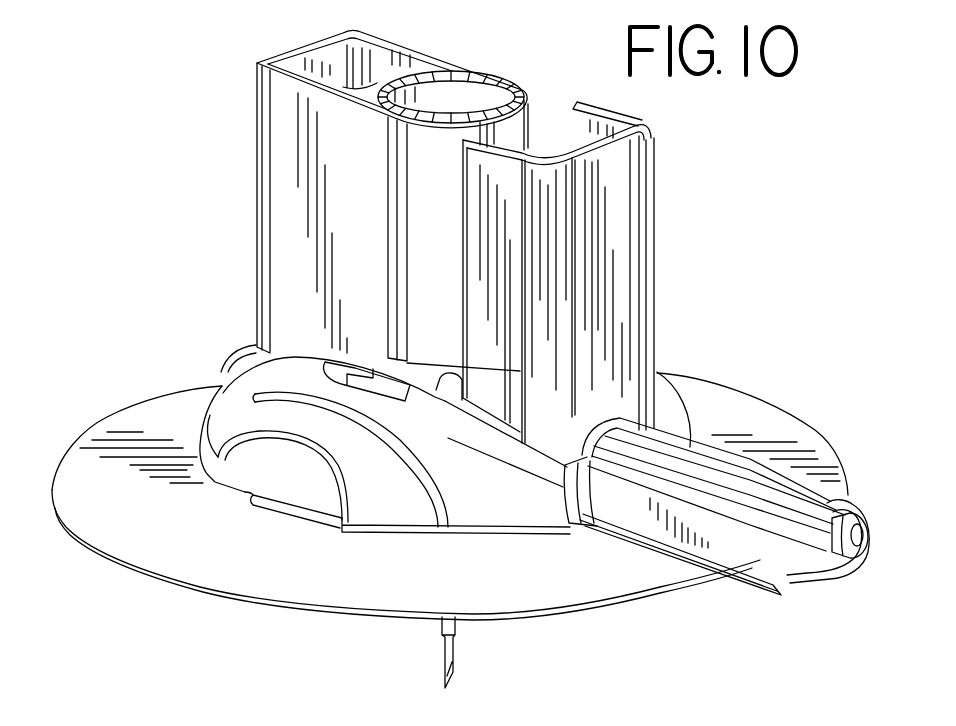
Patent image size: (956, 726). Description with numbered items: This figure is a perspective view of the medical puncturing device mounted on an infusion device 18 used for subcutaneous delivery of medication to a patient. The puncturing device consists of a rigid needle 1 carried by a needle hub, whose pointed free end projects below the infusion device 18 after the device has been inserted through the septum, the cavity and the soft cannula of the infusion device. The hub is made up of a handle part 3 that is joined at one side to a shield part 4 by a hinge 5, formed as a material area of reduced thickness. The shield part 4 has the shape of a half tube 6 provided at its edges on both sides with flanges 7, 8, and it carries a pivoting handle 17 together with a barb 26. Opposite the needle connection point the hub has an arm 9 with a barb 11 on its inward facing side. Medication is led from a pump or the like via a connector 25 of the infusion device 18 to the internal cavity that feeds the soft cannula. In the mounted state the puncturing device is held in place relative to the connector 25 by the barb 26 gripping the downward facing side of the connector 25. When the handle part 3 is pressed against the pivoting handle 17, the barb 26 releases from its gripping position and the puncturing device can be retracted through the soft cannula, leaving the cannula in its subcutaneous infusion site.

The needle 1 is at (447, 657).
The handle part 3 is at (292, 205).
The shield part 4 is at (622, 325).
The hinge 5 is at (459, 404).
The half tube 6 is at (830, 560).
The flange 7 is at (862, 568).
The flange 8 is at (760, 580).
The arm 9 is at (686, 440).
The barb 11 is at (278, 17).
The pivoting handle 17 is at (623, 228).
The infusion device 18 is at (222, 543).
The connector 25 is at (260, 383).
The barb 26 is at (576, 531).